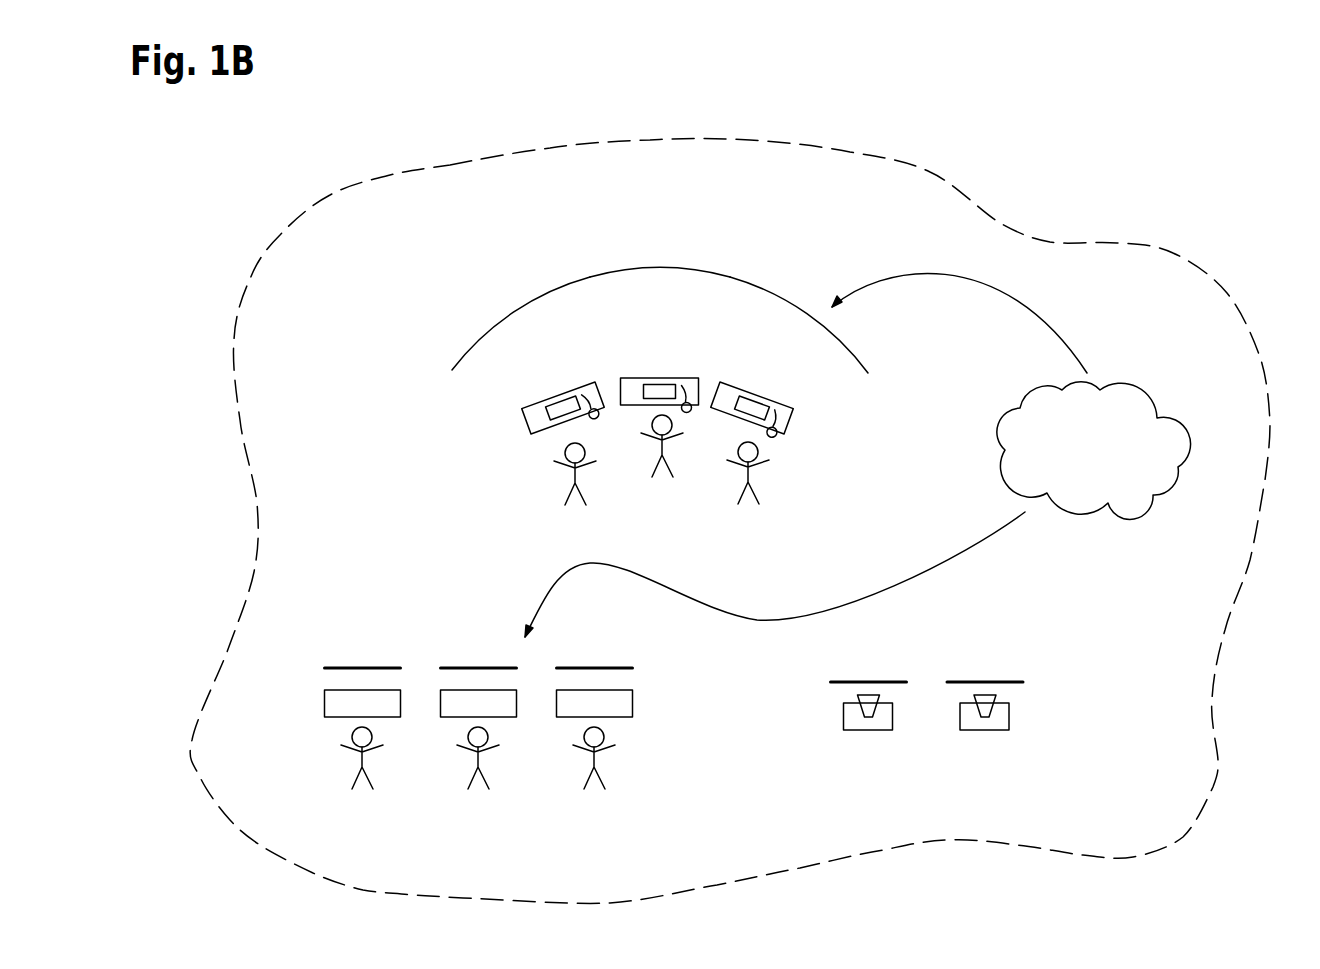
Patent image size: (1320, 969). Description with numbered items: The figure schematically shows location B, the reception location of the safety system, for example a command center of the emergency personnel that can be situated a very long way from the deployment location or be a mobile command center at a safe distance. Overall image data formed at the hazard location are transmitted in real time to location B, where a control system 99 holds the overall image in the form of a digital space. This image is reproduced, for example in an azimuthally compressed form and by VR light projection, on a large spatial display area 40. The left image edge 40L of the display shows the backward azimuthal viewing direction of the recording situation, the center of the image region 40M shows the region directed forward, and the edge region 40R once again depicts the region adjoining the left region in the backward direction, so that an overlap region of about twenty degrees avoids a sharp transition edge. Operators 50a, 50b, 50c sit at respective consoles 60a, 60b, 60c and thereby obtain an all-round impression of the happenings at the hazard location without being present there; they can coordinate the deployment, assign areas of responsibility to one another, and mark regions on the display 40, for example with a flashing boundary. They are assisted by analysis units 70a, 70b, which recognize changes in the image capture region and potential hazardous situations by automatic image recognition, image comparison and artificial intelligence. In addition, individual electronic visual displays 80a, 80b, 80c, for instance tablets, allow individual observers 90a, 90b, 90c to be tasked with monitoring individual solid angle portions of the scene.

The location B is at (243, 817).
The spatial display area 40 is at (662, 268).
The left image edge 40L is at (445, 363).
The center of the image region 40M is at (658, 258).
The edge region 40R is at (877, 365).
The console 60a is at (553, 383).
The console 60b is at (665, 368).
The console 60c is at (767, 387).
The operator 50a is at (577, 486).
The operator 50b is at (665, 482).
The operator 50c is at (747, 486).
The individual electronic visual display 80a is at (368, 667).
The individual electronic visual display 80b is at (482, 667).
The individual electronic visual display 80c is at (597, 667).
The individual observer 90a is at (365, 792).
The individual observer 90b is at (481, 792).
The individual observer 90c is at (597, 792).
The analysis unit 70a is at (873, 740).
The analysis unit 70b is at (990, 740).
The control system 99 is at (1110, 505).